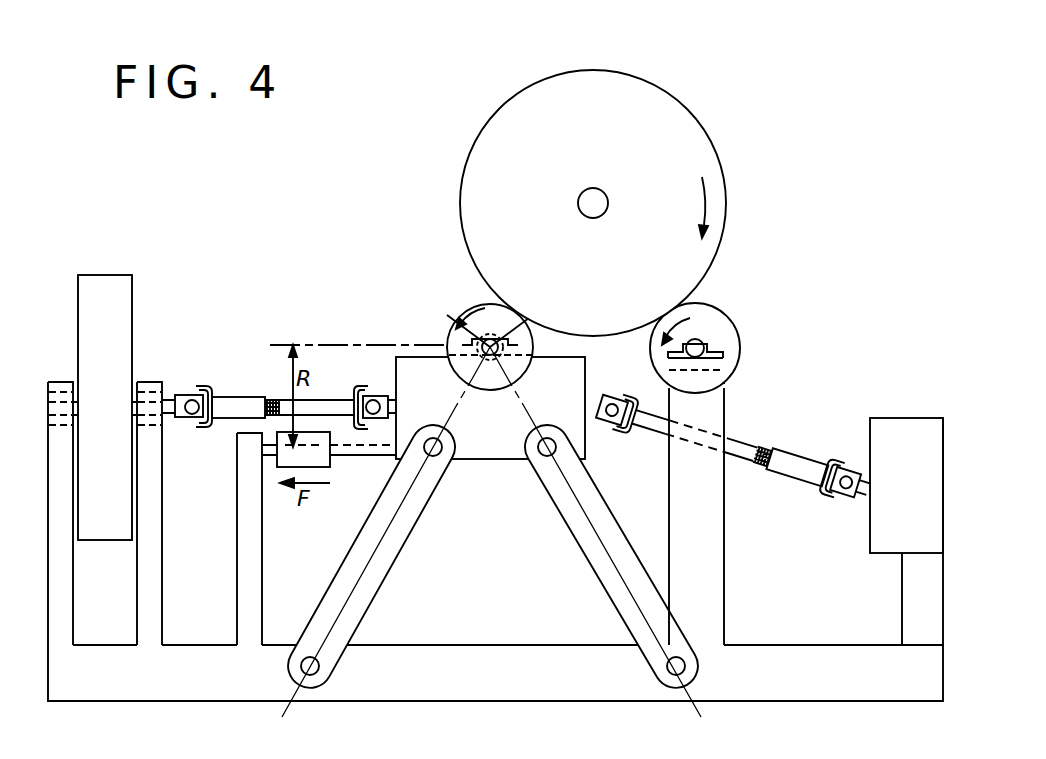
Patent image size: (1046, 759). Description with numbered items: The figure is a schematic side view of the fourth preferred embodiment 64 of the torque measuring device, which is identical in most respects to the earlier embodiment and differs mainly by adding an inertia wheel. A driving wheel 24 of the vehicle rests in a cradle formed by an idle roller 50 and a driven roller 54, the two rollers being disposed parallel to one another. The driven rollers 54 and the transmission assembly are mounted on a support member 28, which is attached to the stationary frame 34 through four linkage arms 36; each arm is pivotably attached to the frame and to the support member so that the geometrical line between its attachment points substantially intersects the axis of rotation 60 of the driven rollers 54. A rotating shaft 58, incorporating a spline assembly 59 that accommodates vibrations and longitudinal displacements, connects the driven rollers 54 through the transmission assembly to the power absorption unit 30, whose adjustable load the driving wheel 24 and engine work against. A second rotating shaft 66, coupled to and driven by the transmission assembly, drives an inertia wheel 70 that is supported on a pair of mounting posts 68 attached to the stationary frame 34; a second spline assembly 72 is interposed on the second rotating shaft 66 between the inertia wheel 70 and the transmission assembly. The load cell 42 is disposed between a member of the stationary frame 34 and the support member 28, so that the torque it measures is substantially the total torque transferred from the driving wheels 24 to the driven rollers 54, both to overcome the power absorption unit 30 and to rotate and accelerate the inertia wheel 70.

The driving wheel 24 is at (677, 106).
The support member 28 is at (484, 462).
The power absorption unit 30 is at (935, 418).
The stationary frame 34 is at (548, 698).
The linkage arms 36 is at (367, 603).
The load cell 42 is at (322, 460).
The idle roller 50 is at (716, 323).
The driven rollers 54 is at (480, 306).
The rotating shaft 58 is at (741, 440).
The spline assembly 59 is at (776, 451).
The axes of rotation 60 is at (490, 347).
The fourth preferred embodiment 64 is at (339, 374).
The second rotating shaft 66 is at (358, 398).
The mounting posts 68 is at (138, 585).
The inertia wheel 70 is at (124, 292).
The second spline assembly 72 is at (268, 402).